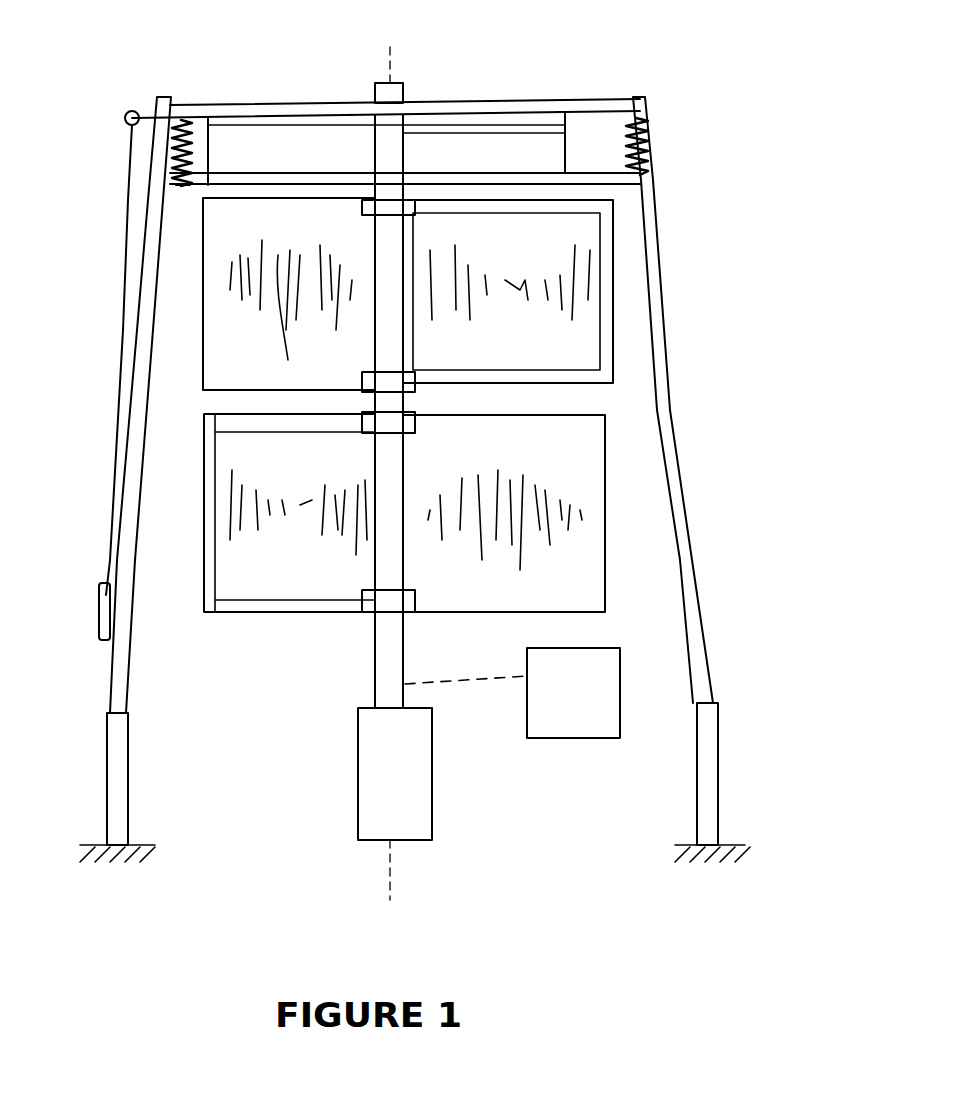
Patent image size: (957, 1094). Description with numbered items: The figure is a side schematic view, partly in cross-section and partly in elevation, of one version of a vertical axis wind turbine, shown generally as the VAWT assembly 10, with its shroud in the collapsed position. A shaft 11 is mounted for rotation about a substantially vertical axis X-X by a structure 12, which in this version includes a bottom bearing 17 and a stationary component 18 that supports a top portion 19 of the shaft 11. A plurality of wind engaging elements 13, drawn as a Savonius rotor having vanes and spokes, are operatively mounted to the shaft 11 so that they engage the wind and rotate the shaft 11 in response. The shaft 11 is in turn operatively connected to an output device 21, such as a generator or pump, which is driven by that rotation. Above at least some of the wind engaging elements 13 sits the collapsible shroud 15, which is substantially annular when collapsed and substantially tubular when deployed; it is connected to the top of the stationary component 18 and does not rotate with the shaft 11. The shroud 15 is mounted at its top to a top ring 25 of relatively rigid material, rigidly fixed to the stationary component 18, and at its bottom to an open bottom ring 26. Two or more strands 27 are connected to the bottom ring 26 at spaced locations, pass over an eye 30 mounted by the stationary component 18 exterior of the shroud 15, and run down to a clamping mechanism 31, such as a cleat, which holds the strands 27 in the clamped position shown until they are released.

The VAWT assembly 10 is at (753, 140).
The shaft 11 is at (378, 632).
The structure 12 is at (172, 775).
The wind engaging elements 13 is at (628, 294).
The collapsible shroud 15 is at (650, 140).
The bottom bearing 17 is at (425, 812).
The stationary component 18 is at (578, 107).
The top portion of the shaft 19 is at (401, 92).
The output device 21 is at (604, 740).
The top ring 25 is at (186, 118).
The bottom ring 26 is at (183, 190).
The strands 27 is at (212, 155).
The eye 30 is at (130, 111).
The clamping mechanism 31 is at (86, 617).